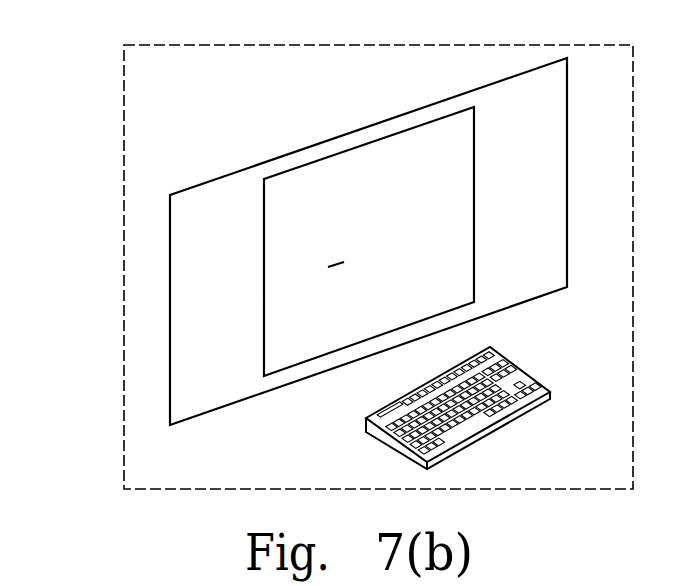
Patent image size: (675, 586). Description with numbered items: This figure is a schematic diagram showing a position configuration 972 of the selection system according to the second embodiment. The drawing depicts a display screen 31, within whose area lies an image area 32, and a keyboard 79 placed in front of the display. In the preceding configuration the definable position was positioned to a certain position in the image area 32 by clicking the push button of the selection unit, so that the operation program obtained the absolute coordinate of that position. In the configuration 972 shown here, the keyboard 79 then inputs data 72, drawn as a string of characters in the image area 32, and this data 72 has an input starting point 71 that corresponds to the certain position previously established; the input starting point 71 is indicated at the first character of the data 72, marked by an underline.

The position configuration 972 is at (124, 144).
The display screen 31 is at (229, 174).
The image area 32 is at (264, 218).
The data 72 is at (315, 252).
The input starting point 71 is at (338, 270).
The keyboard 79 is at (495, 357).